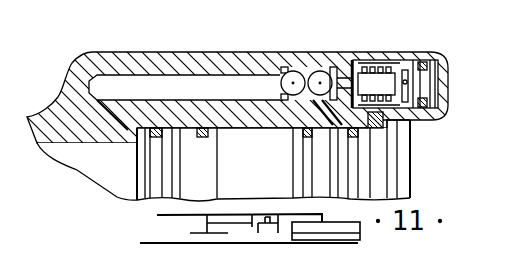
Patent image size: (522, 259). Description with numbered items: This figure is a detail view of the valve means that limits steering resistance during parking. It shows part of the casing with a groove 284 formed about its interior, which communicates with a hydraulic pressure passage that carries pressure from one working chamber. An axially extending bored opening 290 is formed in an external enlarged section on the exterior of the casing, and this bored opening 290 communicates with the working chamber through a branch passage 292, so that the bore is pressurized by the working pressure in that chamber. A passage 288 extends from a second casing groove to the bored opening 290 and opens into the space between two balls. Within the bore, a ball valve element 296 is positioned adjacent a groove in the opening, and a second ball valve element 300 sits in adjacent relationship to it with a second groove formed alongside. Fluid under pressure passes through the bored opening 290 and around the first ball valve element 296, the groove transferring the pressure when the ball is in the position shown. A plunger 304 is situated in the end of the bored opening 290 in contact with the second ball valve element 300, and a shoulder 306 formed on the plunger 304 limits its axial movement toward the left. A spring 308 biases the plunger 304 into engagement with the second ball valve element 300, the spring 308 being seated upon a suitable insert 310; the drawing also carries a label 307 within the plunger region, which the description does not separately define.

The groove 284 is at (176, 126).
The passage 288 is at (291, 64).
The bored opening 290 is at (234, 75).
The branch passage 292 is at (127, 132).
The ball valve element 296 is at (282, 85).
The second ball valve element 300 is at (370, 40).
The plunger 304 is at (423, 58).
The shoulder 306 is at (418, 38).
The valve insert 307 is at (376, 84).
The spring 308 is at (405, 121).
The insert 310 is at (425, 63).